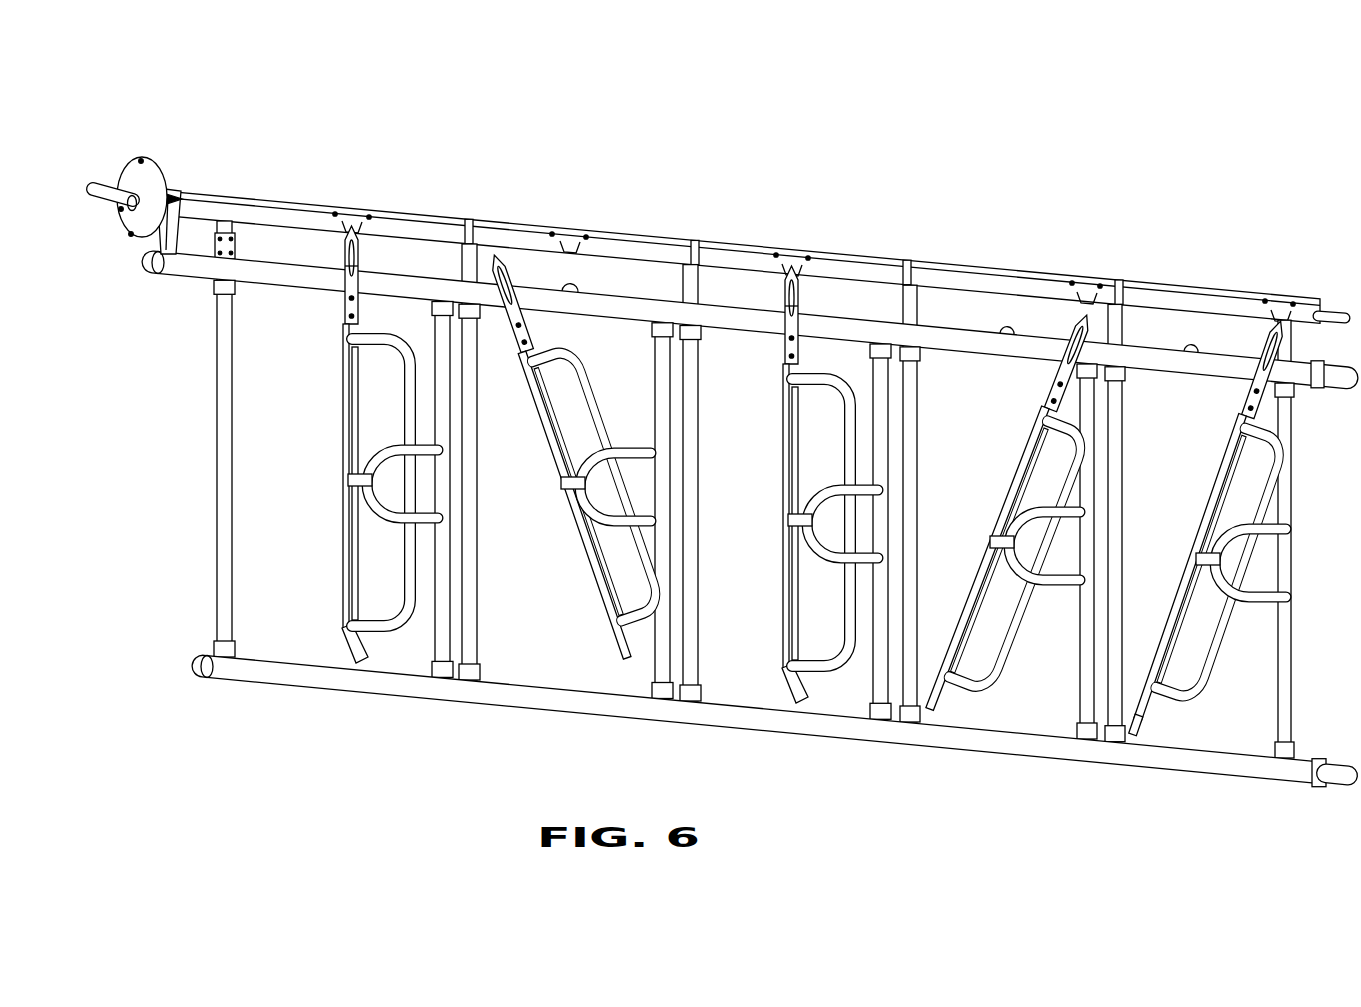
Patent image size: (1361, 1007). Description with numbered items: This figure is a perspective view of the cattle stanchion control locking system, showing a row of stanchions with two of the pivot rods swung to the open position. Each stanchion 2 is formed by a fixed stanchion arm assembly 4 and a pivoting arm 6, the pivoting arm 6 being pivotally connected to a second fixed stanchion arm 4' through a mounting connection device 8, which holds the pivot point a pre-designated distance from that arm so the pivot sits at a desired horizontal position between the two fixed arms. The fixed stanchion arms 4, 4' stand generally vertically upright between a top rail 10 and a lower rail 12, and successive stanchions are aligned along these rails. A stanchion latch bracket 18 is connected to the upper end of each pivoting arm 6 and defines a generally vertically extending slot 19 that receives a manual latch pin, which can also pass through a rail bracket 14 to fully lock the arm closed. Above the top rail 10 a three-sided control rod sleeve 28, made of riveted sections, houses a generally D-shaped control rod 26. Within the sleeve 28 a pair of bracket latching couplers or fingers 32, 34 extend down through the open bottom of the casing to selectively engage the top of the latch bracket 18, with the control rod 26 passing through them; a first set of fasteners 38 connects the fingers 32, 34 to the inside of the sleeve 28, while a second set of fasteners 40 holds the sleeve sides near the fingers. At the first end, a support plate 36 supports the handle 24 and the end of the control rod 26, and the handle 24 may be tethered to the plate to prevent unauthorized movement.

The stanchion 2 is at (203, 365).
The fixed stanchion arm assembly 4 is at (186, 439).
The second fixed stanchion arm 4' is at (423, 490).
The pivoting arm 6 is at (343, 390).
The mounting connection device 8 is at (347, 483).
The top rail 10 is at (177, 265).
The lower rail 12 is at (282, 678).
The rail bracket 14 is at (570, 288).
The stanchion latch bracket 18 is at (363, 275).
The slot 19 is at (347, 256).
The handle 24 is at (96, 178).
The control rod 26 is at (163, 197).
The control rod sleeve 28 is at (298, 207).
The bracket latching coupler 32 is at (800, 264).
The bracket latching coupler 34 is at (803, 266).
The support plate 36 is at (158, 242).
The first set of fasteners 38 is at (558, 248).
The second set of fasteners 40 is at (338, 210).